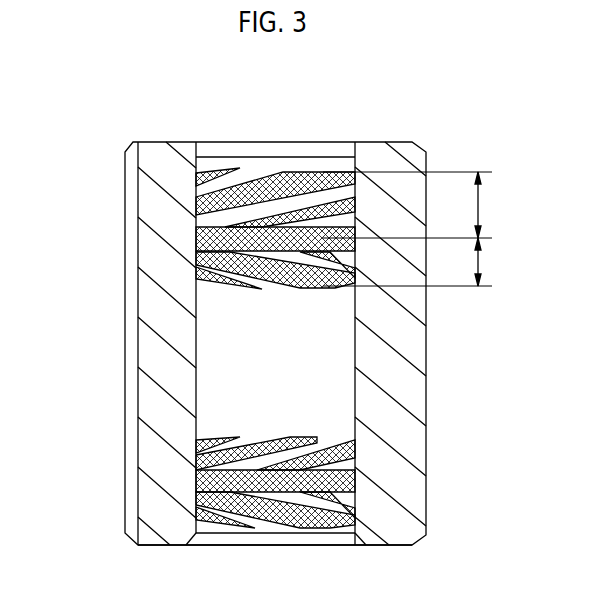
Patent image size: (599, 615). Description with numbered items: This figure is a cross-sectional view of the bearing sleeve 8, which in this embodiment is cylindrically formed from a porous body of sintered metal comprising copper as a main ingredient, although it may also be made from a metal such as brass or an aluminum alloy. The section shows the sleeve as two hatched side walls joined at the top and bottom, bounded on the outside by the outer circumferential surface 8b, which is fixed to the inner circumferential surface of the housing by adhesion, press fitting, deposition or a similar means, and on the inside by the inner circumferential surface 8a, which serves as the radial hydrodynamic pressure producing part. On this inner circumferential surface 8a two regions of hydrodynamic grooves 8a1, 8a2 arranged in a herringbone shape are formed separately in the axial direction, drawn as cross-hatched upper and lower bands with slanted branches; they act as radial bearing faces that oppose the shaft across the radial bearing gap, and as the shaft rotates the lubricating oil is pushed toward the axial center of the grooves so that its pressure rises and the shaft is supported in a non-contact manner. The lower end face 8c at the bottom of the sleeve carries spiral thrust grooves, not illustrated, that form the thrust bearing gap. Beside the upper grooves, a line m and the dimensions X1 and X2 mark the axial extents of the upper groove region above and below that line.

The bearing sleeve 8 is at (280, 342).
The inner circumferential surface 8a is at (360, 356).
The outer circumferential surface 8b is at (125, 320).
The lower end face 8c is at (160, 545).
The hydrodynamic grooves 8a1 is at (233, 182).
The hydrodynamic grooves 8a2 is at (240, 447).
The dimension X1 is at (417, 205).
The dimension X2 is at (417, 262).
The reference line m is at (420, 235).